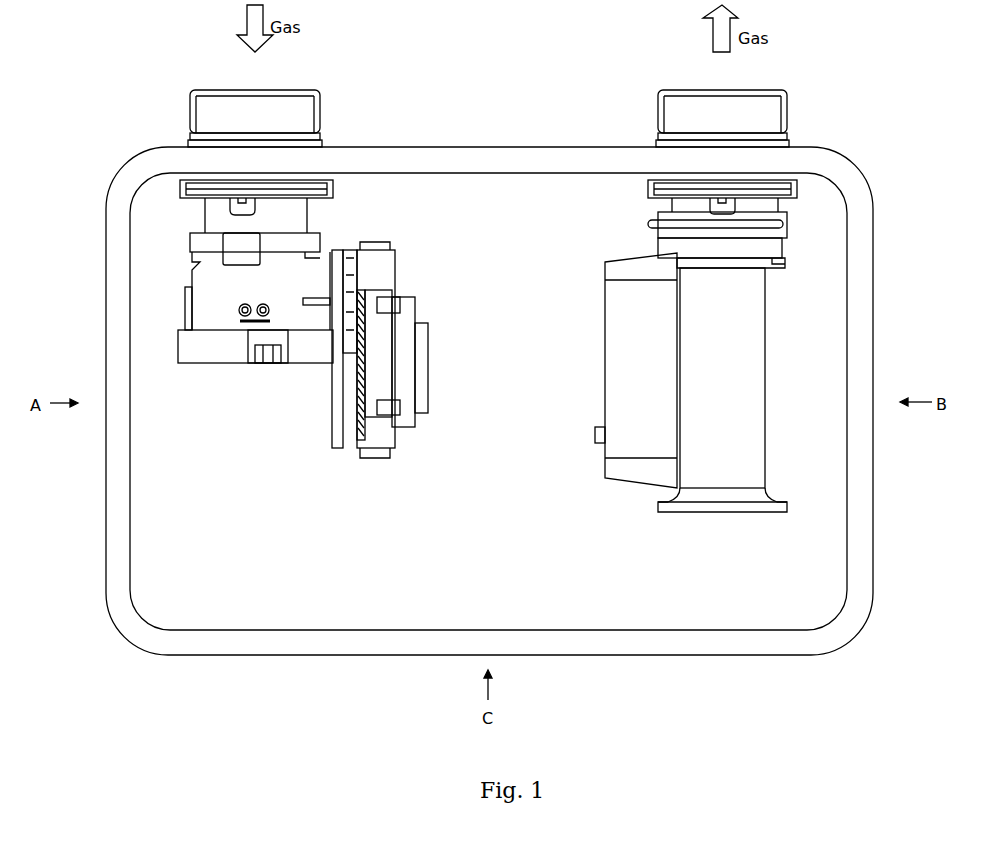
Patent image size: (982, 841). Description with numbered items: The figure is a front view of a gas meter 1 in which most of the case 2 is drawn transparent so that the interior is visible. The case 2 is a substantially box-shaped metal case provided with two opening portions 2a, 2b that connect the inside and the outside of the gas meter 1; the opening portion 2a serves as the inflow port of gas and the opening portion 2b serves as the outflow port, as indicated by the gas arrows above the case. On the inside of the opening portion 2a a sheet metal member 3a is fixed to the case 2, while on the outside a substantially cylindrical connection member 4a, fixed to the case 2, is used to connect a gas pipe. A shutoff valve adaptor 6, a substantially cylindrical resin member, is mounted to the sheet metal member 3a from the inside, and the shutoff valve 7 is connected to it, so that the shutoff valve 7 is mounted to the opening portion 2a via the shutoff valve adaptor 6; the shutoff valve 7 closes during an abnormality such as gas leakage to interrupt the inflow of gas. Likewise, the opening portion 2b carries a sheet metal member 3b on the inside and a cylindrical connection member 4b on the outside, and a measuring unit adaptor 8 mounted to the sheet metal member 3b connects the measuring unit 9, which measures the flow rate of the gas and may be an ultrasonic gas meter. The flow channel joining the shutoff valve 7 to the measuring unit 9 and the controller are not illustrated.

The gas meter 1 is at (95, 298).
The case 2 is at (830, 364).
The opening portion 2a is at (250, 163).
The opening portion 2b is at (716, 163).
The sheet metal member 3a is at (316, 178).
The sheet metal member 3b is at (784, 178).
The connection member 4a is at (285, 105).
The connection member 4b is at (753, 105).
The shutoff valve adaptor 6 is at (215, 216).
The shutoff valve 7 is at (200, 306).
The measuring unit adaptor 8 is at (768, 206).
The measuring unit 9 is at (755, 385).